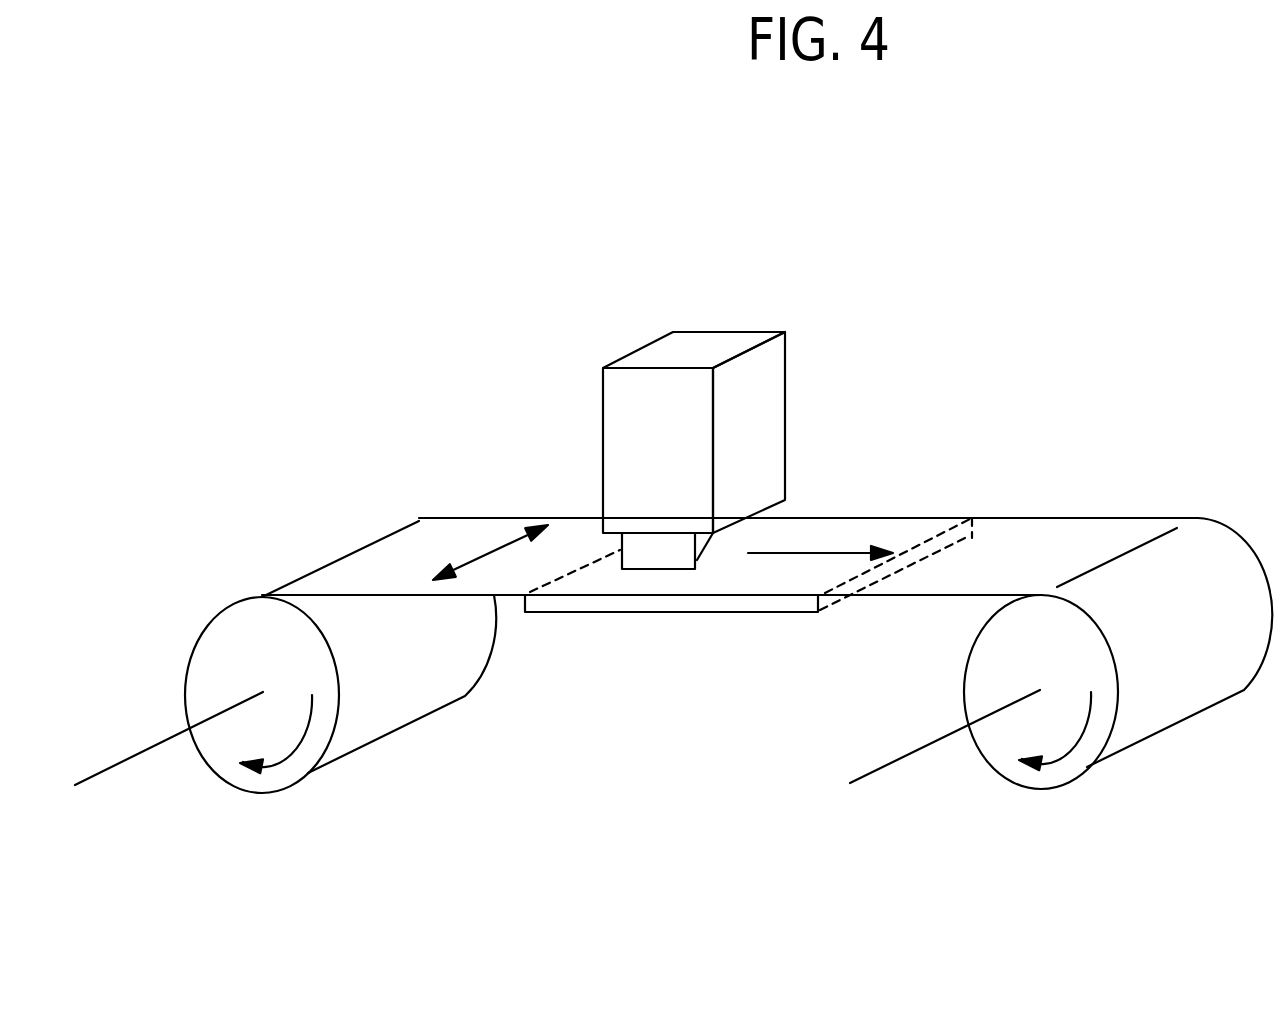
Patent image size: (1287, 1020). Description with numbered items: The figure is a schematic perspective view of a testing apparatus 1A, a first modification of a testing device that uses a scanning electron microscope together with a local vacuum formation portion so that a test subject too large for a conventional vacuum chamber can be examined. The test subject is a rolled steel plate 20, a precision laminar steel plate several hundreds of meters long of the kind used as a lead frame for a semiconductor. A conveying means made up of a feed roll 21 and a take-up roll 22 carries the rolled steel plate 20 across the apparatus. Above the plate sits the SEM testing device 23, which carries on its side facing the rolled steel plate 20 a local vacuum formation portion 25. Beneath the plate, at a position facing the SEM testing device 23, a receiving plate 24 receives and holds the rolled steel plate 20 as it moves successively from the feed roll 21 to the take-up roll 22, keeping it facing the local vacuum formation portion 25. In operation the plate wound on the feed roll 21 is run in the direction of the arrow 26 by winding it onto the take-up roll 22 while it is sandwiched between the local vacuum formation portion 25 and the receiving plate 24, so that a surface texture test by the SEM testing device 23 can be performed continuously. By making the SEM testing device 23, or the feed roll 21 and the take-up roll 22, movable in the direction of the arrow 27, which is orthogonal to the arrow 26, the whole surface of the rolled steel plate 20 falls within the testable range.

The testing apparatus 1A is at (962, 310).
The rolled steel plate 20 is at (953, 543).
The feed roll 21 is at (370, 707).
The take-up roll 22 is at (1000, 753).
The SEM testing device 23 is at (720, 330).
The receiving plate 24 is at (590, 612).
The local vacuum formation portion 25 is at (669, 558).
The arrow 26 is at (807, 553).
The arrow 27 is at (480, 565).